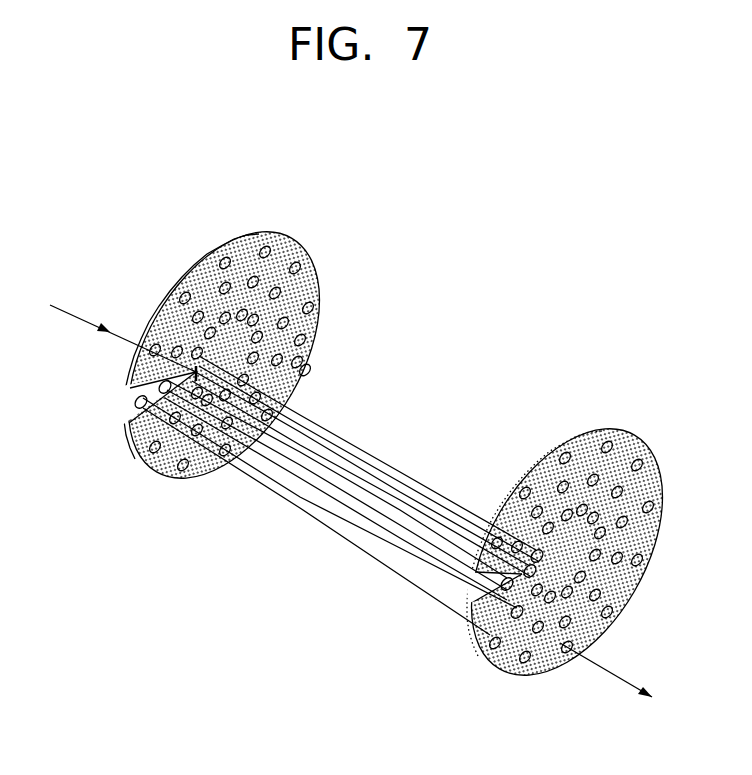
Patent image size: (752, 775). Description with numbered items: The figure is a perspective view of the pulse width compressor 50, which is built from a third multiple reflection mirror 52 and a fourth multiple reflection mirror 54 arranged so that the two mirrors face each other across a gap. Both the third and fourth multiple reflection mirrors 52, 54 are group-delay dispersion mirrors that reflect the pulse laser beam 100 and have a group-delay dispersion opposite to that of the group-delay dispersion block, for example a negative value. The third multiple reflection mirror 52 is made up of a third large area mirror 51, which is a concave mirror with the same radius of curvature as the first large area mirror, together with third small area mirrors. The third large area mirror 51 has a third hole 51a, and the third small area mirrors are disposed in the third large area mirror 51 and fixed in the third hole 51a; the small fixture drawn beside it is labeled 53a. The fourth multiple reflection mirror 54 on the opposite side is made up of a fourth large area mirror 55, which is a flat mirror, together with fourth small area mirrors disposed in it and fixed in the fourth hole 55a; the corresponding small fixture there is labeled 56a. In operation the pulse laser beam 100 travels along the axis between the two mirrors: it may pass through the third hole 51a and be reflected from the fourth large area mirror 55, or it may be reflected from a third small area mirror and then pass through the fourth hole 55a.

The pulse width compressor 50 is at (366, 463).
The third large area mirror 51 is at (153, 463).
The third hole 51a is at (122, 398).
The third multiple reflection mirror 52 is at (194, 365).
The second pin 53a is at (131, 408).
The fourth multiple reflection mirror 54 is at (519, 562).
The fourth large area mirror 55 is at (500, 655).
The fourth hole 55a is at (466, 600).
The second receiving portion 56a is at (515, 612).
The pulse laser beam 100 is at (77, 318).